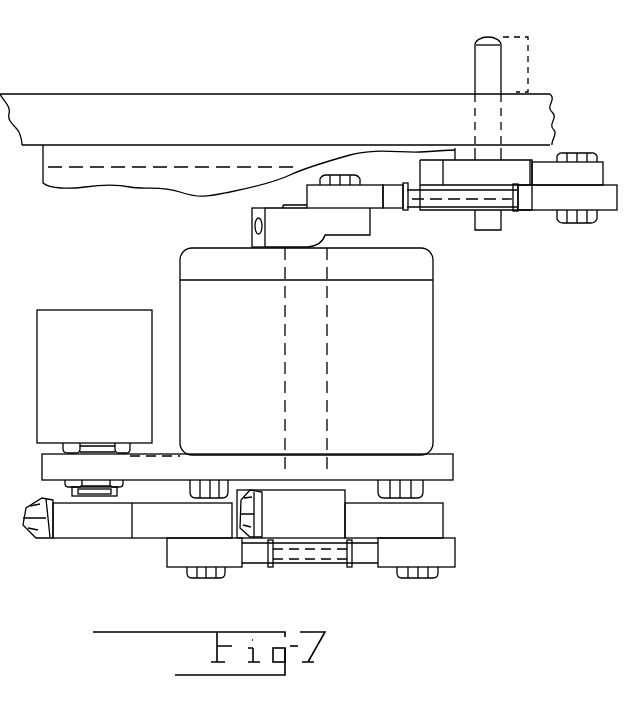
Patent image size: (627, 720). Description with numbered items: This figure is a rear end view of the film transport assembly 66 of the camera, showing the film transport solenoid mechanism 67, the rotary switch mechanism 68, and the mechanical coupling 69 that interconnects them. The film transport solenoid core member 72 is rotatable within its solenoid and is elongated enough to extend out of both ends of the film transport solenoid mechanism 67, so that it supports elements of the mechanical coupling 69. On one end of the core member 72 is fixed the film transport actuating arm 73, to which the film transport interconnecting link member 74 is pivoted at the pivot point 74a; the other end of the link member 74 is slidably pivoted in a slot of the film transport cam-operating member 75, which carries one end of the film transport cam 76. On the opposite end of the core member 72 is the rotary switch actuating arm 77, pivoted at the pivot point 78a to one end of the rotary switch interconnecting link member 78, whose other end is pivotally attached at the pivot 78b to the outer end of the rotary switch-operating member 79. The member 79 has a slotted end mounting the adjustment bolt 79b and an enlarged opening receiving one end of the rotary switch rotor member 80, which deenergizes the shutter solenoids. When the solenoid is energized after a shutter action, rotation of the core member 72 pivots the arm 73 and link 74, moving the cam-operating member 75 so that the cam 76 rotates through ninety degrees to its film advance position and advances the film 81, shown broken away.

The film transport assembly 66 is at (341, 360).
The film transport solenoid mechanism 67 is at (385, 375).
The rotary switch mechanism 68 is at (100, 350).
The mechanical coupling 69 is at (455, 522).
The film transport solenoid core member 72 is at (330, 333).
The film transport actuating arm 73 is at (277, 215).
The film transport interconnecting link member 74 is at (447, 200).
The pivot point 74a is at (333, 177).
The film transport cam-operating member 75 is at (576, 181).
The film transport cam 76 is at (478, 64).
The rotary switch actuating arm 77 is at (298, 524).
The rotary switch interconnecting link member 78 is at (300, 560).
The pivot point 78a is at (412, 578).
The pivot 78b is at (210, 576).
The rotary switch-operating member 79 is at (145, 530).
The adjustment bolt 79b is at (25, 538).
The rotary switch rotor member 80 is at (85, 500).
The film 81 is at (190, 127).